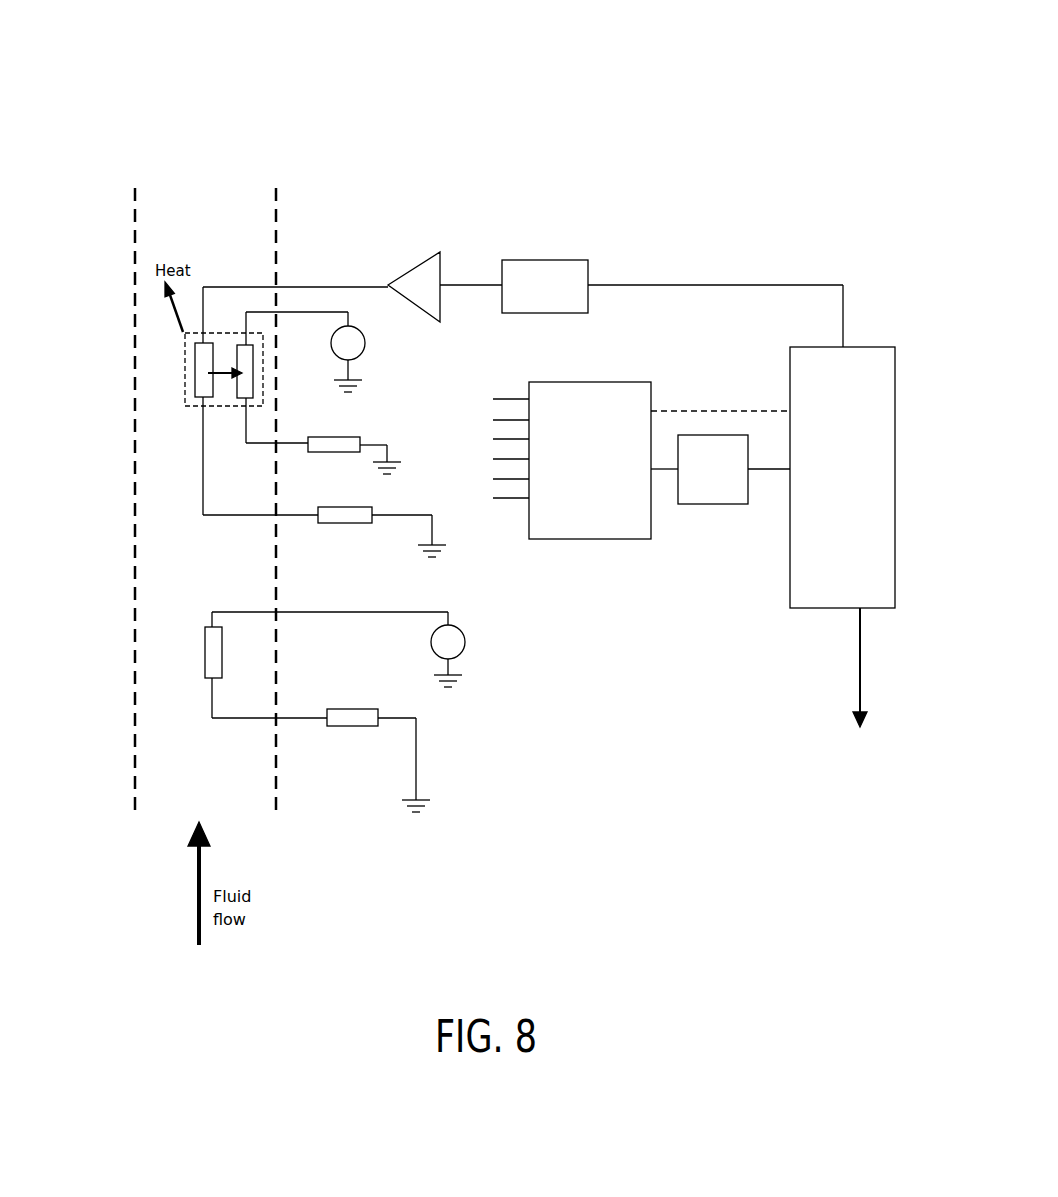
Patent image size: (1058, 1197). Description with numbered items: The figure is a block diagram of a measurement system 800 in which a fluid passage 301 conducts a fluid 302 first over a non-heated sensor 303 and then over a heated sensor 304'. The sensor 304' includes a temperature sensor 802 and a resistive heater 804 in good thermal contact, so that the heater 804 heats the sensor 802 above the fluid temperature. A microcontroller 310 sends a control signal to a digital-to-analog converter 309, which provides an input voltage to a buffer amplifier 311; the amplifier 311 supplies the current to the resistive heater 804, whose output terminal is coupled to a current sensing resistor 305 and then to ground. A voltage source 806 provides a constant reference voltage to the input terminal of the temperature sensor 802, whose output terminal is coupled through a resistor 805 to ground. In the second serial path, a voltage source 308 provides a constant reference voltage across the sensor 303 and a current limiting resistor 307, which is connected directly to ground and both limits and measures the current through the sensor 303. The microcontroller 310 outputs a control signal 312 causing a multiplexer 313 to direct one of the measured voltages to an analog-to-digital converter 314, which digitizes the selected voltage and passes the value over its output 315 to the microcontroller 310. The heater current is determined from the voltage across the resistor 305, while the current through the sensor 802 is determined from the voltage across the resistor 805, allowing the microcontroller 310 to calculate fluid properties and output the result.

The measurement system 800 is at (429, 115).
The fluid passage 301 is at (277, 200).
The fluid 302 is at (207, 780).
The non-heated sensor 303 is at (205, 666).
The sensor 304' is at (148, 369).
The current sensing resistor 305 is at (358, 507).
The current limiting resistor 307 is at (357, 727).
The voltage source 308 is at (463, 650).
The digital-to-analog converter 309 is at (562, 277).
The microcontroller 310 is at (855, 390).
The buffer amplifier 311 is at (422, 285).
The control signal 312 is at (708, 410).
The multiplexer 313 is at (597, 412).
The analog-to-digital converter 314 is at (720, 447).
The ADC output line 315 is at (768, 465).
The temperature sensor 802 is at (237, 392).
The resistive heater 804 is at (195, 350).
The resistor 805 is at (310, 451).
The voltage source 806 is at (365, 345).